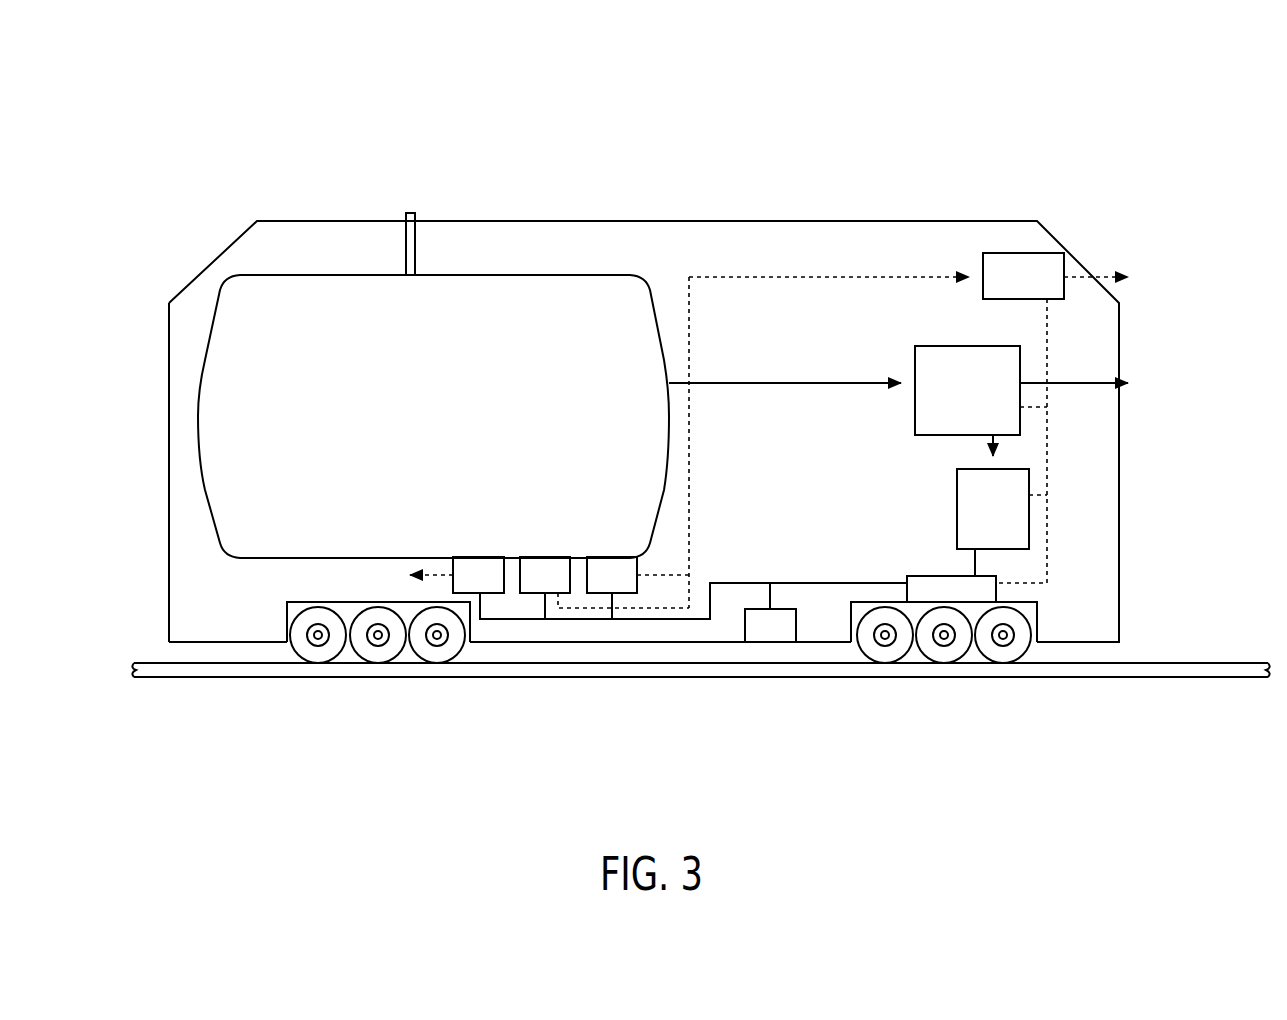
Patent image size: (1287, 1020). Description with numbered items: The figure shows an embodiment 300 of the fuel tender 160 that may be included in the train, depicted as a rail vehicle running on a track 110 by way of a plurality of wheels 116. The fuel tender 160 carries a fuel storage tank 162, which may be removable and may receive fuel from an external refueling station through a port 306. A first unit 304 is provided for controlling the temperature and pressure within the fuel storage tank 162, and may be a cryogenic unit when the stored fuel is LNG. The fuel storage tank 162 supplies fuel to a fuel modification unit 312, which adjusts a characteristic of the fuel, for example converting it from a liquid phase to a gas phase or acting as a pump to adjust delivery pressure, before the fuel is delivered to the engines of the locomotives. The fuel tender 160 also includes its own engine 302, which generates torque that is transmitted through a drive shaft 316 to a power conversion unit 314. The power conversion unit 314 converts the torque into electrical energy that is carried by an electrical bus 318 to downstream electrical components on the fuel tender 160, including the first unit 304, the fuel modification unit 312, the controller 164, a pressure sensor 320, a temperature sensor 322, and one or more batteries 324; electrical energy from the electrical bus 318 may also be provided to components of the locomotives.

The embodiment of the fuel tender 300 is at (1172, 84).
The fuel tender 160 is at (305, 220).
The fuel storage tank 162 is at (433, 416).
The port 306 is at (416, 268).
The controller 164 is at (941, 430).
The fuel modification unit 312 is at (938, 401).
The engine 302 is at (1002, 509).
The drive shaft 316 is at (975, 568).
The power conversion unit 314 is at (951, 589).
The first unit 304 is at (418, 575).
The pressure sensor 320 is at (604, 582).
The temperature sensor 322 is at (638, 575).
The electrical bus 318 is at (745, 583).
The batteries 324 is at (770, 625).
The wheels 116 is at (993, 656).
The track 110 is at (1178, 679).